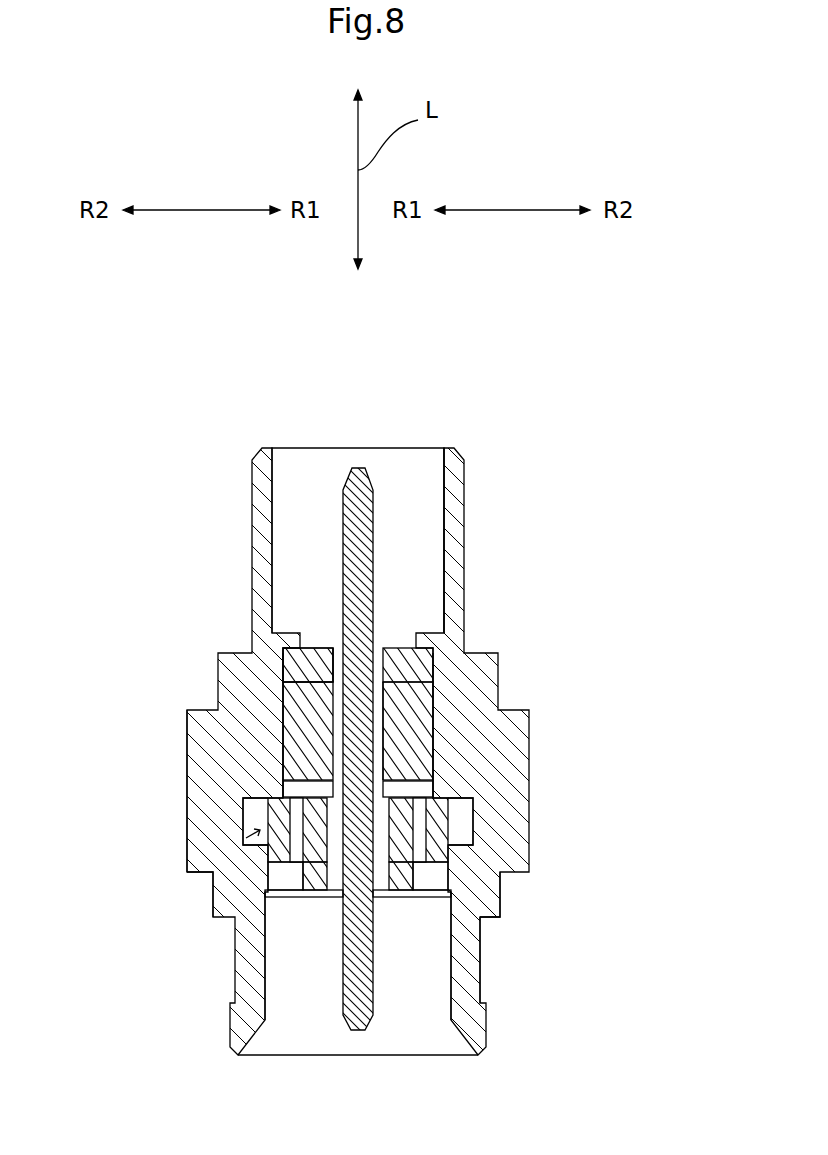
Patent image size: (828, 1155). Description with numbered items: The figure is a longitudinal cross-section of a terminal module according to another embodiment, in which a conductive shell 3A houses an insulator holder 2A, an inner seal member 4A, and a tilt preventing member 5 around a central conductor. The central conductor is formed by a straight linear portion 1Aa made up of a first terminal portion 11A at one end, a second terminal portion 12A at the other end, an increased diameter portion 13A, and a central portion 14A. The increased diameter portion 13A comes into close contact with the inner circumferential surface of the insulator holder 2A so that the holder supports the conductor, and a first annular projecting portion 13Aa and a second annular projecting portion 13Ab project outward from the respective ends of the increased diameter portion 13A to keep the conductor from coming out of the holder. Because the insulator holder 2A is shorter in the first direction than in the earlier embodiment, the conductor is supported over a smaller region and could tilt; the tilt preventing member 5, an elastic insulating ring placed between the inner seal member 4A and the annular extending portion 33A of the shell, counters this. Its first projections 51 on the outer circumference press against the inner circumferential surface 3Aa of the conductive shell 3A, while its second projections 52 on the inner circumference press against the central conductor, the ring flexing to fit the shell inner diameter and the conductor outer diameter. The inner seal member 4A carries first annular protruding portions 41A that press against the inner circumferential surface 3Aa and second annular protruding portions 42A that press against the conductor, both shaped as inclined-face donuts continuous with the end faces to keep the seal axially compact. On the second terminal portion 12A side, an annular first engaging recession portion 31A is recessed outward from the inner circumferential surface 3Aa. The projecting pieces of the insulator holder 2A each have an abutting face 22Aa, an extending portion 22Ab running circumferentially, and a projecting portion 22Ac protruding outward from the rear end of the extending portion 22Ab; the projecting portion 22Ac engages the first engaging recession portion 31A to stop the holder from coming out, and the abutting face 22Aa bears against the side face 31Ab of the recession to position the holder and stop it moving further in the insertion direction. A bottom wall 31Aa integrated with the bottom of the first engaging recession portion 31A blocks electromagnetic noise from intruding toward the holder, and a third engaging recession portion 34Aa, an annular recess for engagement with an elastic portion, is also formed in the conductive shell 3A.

The straight linear portion 1Aa is at (375, 496).
The first terminal portion 11A is at (340, 508).
The second terminal portion 12A is at (347, 985).
The increased diameter portion 13A is at (290, 893).
The first annular projecting portion 13Aa is at (433, 730).
The second annular projecting portion 13Ab is at (393, 897).
The central portion 14A is at (280, 707).
The insulator holder 2A is at (215, 845).
The abutting face 22Aa is at (277, 797).
The extending portion 22Ab is at (500, 918).
The projecting portion 22Ac is at (457, 825).
The conductive shell 3A is at (535, 731).
The inner circumferential surface 3Aa is at (442, 498).
The first engaging recession portion 31A is at (443, 787).
The bottom wall 31Aa is at (212, 845).
The side face 31Ab is at (250, 818).
The annular extending portion 33A is at (288, 650).
The third engaging recession portion 34Aa is at (481, 967).
The inner seal member 4A is at (305, 738).
The first annular protruding portion 41A is at (437, 672).
The second annular protruding portion 42A is at (371, 700).
The tilt preventing member 5 is at (402, 646).
The first projection 51 is at (287, 666).
The second projection 52 is at (331, 655).